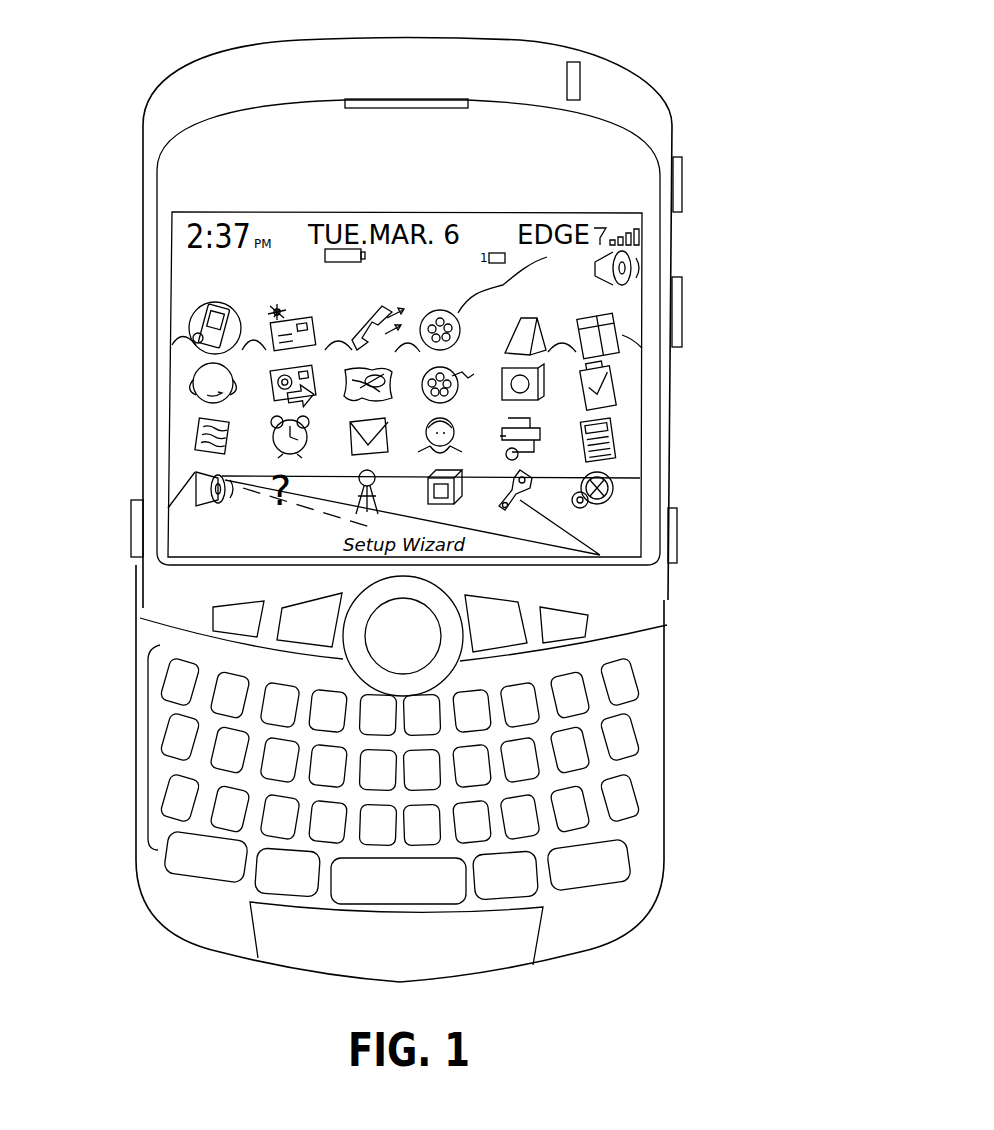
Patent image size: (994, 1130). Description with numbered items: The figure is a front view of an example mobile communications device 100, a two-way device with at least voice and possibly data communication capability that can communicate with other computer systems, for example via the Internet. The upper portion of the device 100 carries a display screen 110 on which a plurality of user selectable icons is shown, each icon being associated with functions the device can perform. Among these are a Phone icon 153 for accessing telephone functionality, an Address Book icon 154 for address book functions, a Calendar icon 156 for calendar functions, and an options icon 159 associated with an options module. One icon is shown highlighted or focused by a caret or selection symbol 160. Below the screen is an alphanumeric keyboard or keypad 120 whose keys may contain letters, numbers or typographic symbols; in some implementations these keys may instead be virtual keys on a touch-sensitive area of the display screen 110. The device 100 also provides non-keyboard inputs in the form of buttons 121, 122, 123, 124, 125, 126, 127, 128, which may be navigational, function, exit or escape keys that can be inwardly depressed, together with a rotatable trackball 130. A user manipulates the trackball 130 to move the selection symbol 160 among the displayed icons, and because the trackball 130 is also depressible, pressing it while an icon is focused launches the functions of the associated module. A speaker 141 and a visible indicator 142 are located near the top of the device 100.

The mobile communications device 100 is at (714, 340).
The display screen 110 is at (172, 300).
The alphanumeric keyboard 120 is at (148, 742).
The button 121 is at (131, 526).
The button 122 is at (716, 174).
The button 123 is at (684, 311).
The button 124 is at (708, 540).
The button 125 is at (213, 619).
The button 126 is at (287, 600).
The button 127 is at (508, 618).
The button 128 is at (574, 606).
The trackball 130 is at (430, 614).
The speaker 141 is at (345, 100).
The visible indicator 142 is at (567, 80).
The Phone icon 153 is at (370, 322).
The Address Book icon 154 is at (612, 338).
The Calendar icon 156 is at (520, 335).
The options icon 159 is at (600, 557).
The selection symbol 160 is at (210, 302).